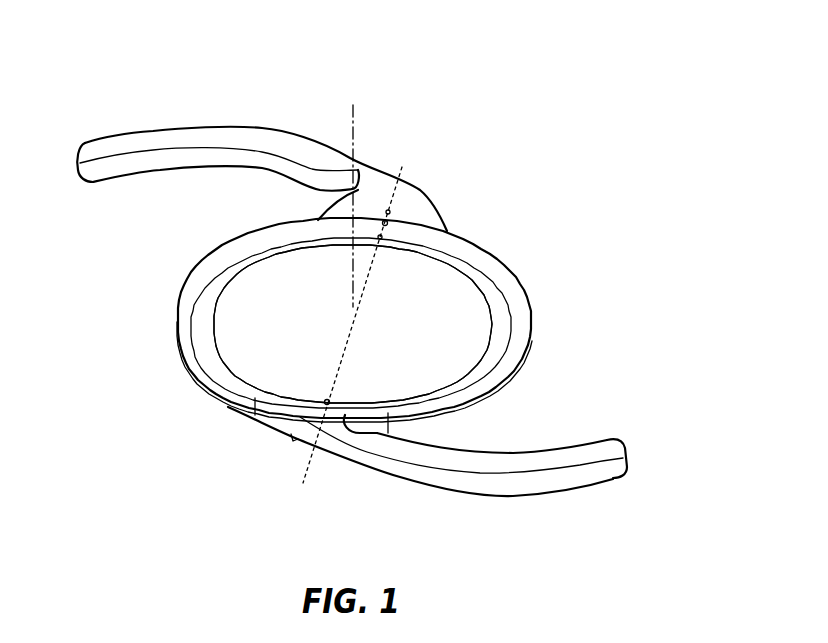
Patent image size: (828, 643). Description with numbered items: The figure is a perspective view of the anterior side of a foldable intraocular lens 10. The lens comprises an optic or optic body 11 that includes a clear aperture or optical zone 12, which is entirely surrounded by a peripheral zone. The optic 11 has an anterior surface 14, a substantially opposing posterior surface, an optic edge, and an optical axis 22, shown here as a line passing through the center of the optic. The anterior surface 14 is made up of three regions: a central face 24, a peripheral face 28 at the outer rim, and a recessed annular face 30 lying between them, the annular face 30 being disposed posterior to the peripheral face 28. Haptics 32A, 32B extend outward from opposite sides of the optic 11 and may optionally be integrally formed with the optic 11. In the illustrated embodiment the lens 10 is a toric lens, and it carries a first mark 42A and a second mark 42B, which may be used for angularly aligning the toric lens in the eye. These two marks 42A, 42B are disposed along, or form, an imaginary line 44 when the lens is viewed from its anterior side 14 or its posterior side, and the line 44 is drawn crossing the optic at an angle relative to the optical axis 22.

The foldable intraocular lens 10 is at (597, 137).
The optic 11 is at (175, 296).
The optical zone 12 is at (413, 364).
The anterior surface 14 is at (243, 305).
The optical axis 22 is at (358, 108).
The central face 24 is at (472, 352).
The peripheral face 28 is at (513, 287).
The recessed annular face 30 is at (500, 311).
The haptic 32A is at (190, 107).
The haptic 32B is at (438, 508).
The first mark 42A is at (375, 226).
The second mark 42B is at (322, 398).
The imaginary line 44 is at (342, 357).